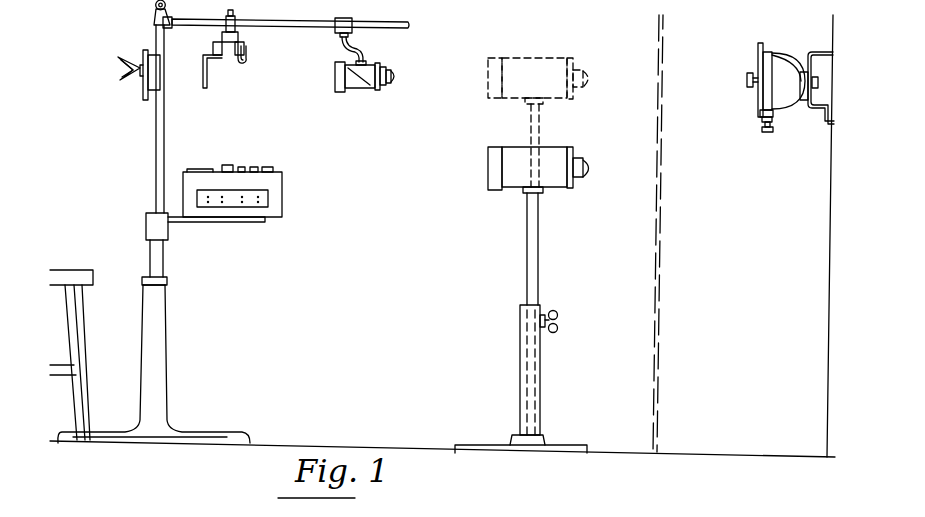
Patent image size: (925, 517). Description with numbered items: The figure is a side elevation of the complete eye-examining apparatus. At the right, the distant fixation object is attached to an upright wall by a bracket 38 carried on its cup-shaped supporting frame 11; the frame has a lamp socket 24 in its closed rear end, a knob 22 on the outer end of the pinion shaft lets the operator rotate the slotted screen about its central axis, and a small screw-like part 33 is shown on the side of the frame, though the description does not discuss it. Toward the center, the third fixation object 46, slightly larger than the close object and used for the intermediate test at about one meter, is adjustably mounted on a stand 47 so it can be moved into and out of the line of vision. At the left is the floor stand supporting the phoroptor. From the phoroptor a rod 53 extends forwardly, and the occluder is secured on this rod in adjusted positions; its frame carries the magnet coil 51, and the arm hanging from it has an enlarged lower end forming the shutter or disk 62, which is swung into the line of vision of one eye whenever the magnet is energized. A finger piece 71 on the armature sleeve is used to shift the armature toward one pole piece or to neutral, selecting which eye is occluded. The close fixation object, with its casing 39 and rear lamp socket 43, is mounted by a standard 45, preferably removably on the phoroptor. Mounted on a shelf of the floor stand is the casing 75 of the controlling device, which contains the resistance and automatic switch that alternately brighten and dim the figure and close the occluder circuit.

The supporting frame 11 is at (790, 92).
The actuating member or knob 22 is at (766, 132).
The lamp socket 24 is at (815, 77).
The adjusting screw 33 is at (750, 77).
The bracket 38 is at (813, 110).
The supporting frame or casing 39 is at (347, 82).
The lamp socket 43 is at (392, 72).
The standard 45 is at (362, 51).
The third fixation object 46 is at (547, 165).
The stand 47 is at (538, 397).
The magnet coil 51 is at (222, 35).
The rod 53 is at (261, 23).
The shutter or disk 62 is at (207, 88).
The finger piece 71 is at (246, 62).
The casing 75 is at (270, 185).